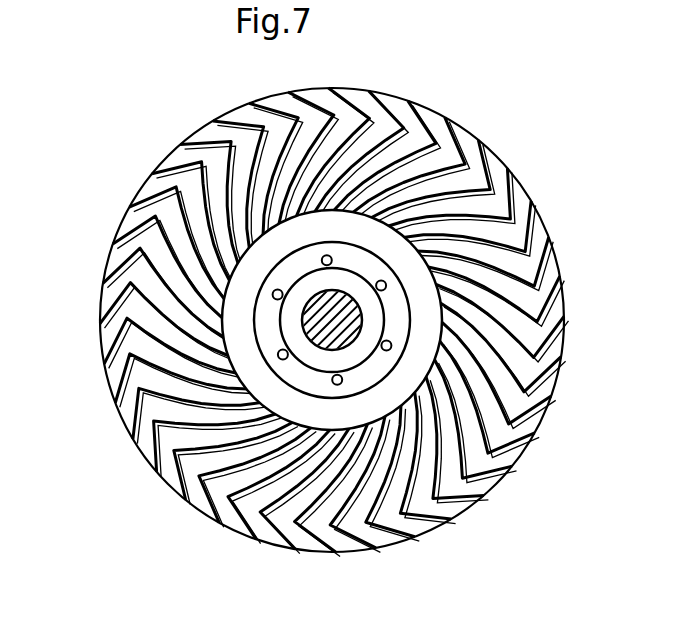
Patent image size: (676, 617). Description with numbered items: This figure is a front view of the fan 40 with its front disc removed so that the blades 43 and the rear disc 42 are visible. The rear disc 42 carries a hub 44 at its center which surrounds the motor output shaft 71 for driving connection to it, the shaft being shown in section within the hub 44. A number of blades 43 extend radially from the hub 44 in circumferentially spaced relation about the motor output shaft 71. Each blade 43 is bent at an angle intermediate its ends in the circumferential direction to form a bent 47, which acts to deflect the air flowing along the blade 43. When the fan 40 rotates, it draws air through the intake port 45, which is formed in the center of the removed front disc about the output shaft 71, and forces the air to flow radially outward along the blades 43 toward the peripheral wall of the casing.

The fan 40 is at (158, 470).
The rear disc 42 is at (413, 347).
The blades 43 is at (173, 243).
The hub 44 is at (355, 286).
The intake port 45 is at (324, 420).
The bent 47 is at (408, 130).
The motor output shaft 71 is at (321, 327).